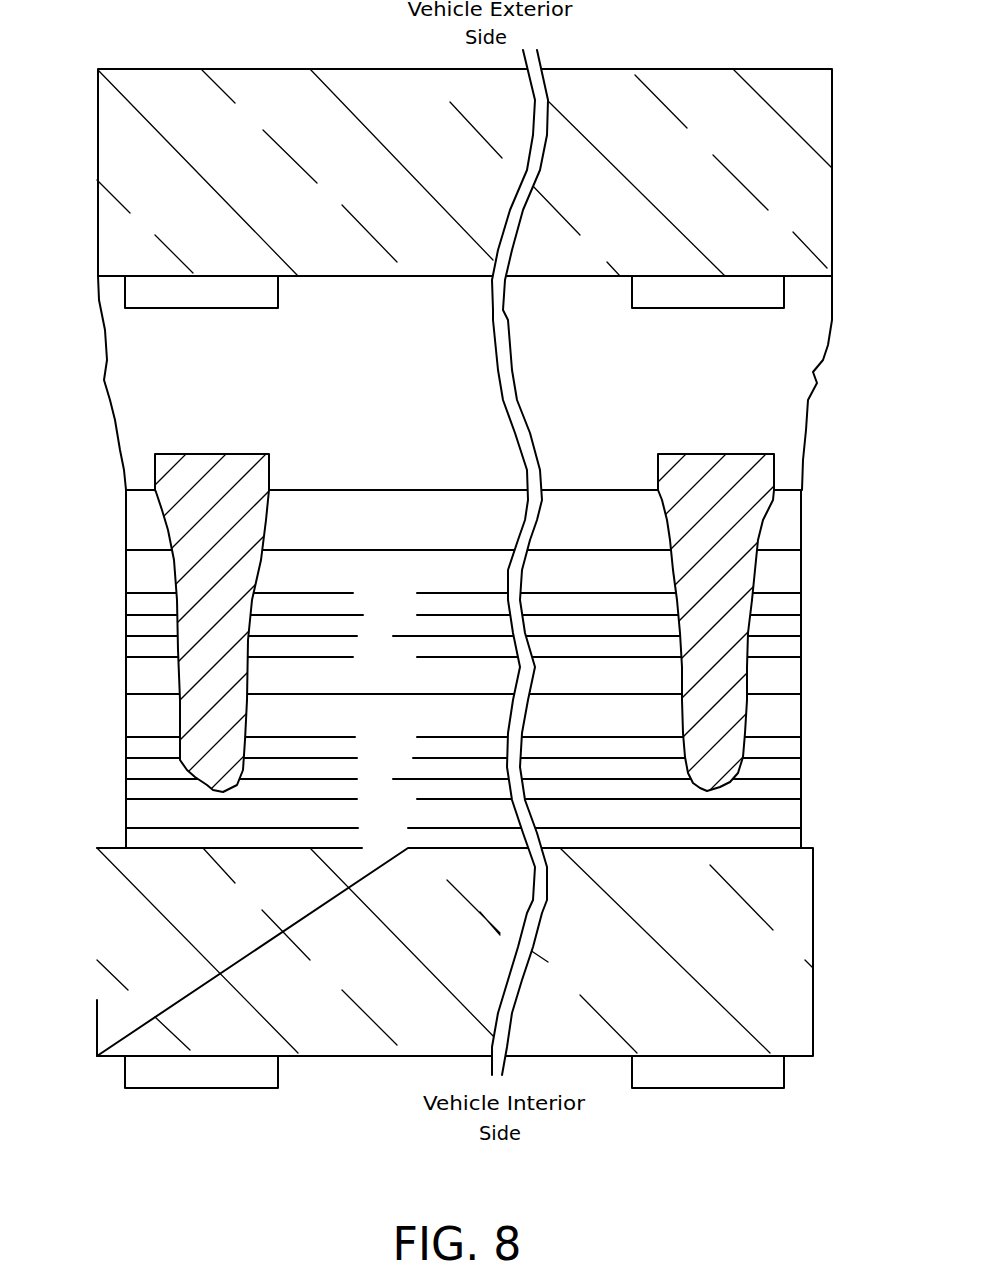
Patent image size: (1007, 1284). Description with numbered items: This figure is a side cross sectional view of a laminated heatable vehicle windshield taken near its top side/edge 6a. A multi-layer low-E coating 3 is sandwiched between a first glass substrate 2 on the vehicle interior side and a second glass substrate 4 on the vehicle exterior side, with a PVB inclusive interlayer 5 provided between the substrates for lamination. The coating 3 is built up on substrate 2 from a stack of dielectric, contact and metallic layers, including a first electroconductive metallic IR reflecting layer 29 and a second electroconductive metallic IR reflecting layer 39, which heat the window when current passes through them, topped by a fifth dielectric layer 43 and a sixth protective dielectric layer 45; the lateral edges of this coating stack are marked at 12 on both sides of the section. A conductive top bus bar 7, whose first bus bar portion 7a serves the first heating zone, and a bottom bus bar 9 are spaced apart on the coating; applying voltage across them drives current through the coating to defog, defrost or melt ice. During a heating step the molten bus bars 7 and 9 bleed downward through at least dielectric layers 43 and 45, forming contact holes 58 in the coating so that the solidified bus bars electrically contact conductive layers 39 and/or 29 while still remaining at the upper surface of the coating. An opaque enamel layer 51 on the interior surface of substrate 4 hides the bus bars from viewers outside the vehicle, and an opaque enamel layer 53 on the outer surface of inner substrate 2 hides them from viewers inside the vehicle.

The first glass substrate 2 is at (350, 1048).
The coating 3 is at (817, 840).
The second glass substrate 4 is at (823, 130).
The PVB inclusive interlayer 5 is at (798, 405).
The top side/edge 6a is at (95, 1033).
The conductive top bus bar 7 is at (188, 472).
The first bus bar portion 7a is at (245, 472).
The bottom bus bar 9 is at (745, 458).
The edge portion of coating layers 12 is at (127, 828).
The first electroconductive metallic IR reflecting layer 29 is at (770, 767).
The second electroconductive metallic IR reflecting layer 39 is at (582, 630).
The fifth dielectric layer 43 is at (315, 575).
The sixth protective dielectric layer 45 is at (300, 505).
The opaque enamel layer 51 is at (213, 310).
The opaque enamel layer 53 is at (213, 1090).
The contact holes 58 is at (763, 537).